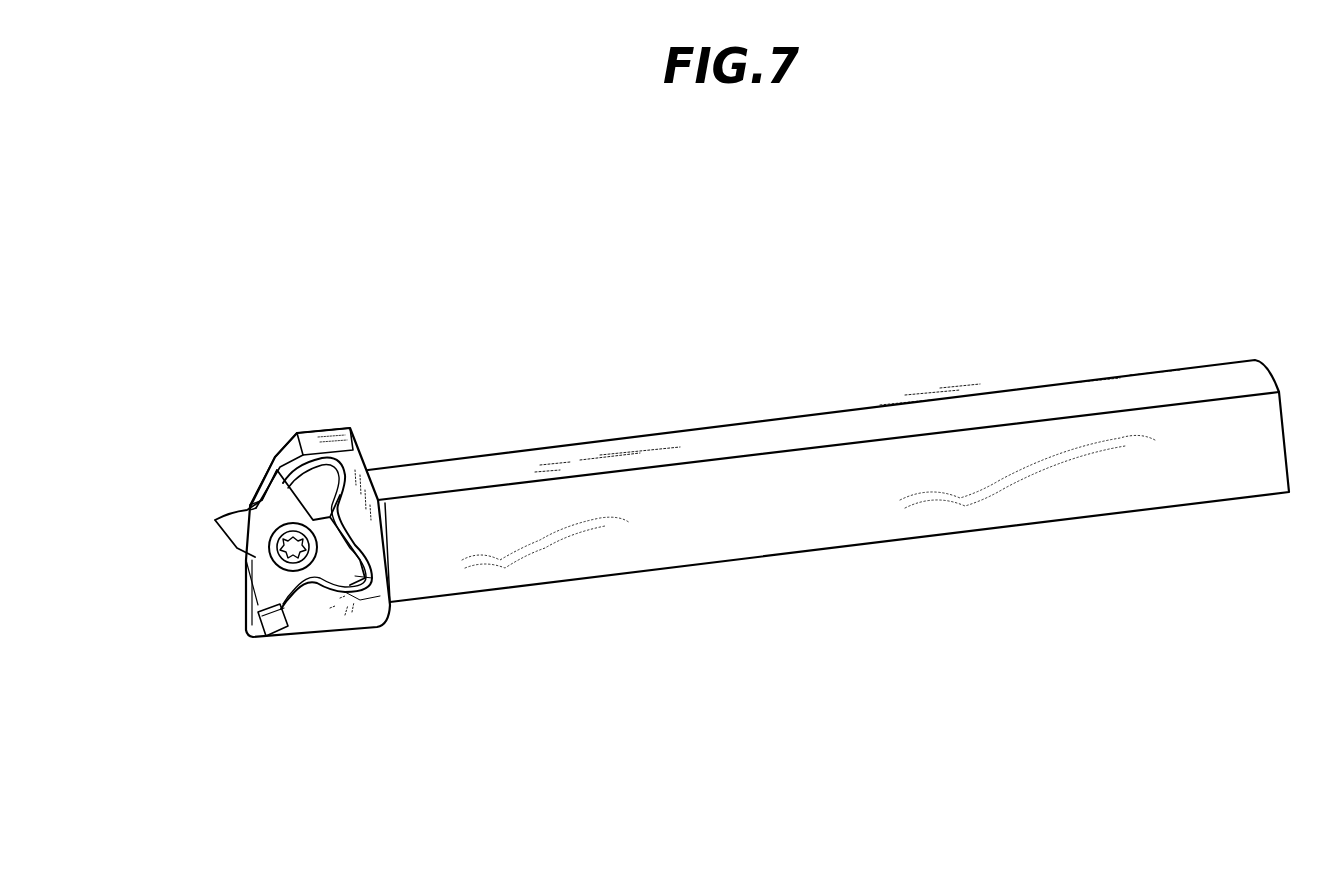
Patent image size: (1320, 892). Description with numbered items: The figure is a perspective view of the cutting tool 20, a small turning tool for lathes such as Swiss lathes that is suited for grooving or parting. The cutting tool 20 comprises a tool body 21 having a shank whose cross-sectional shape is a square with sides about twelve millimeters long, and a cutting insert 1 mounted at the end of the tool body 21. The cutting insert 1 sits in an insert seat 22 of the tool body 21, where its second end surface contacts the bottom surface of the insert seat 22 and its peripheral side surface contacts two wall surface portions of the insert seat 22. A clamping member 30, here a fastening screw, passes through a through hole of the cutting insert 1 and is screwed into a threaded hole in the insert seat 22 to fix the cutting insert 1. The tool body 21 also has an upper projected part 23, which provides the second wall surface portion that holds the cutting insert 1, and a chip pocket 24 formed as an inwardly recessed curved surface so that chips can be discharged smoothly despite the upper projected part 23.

The cutting insert 1 is at (242, 612).
The cutting tool 20 is at (847, 402).
The tool body 21 is at (365, 488).
The insert seat 22 is at (285, 615).
The upper projected part 23 is at (332, 433).
The chip pocket 24 is at (272, 482).
The clamping member 30 is at (310, 563).